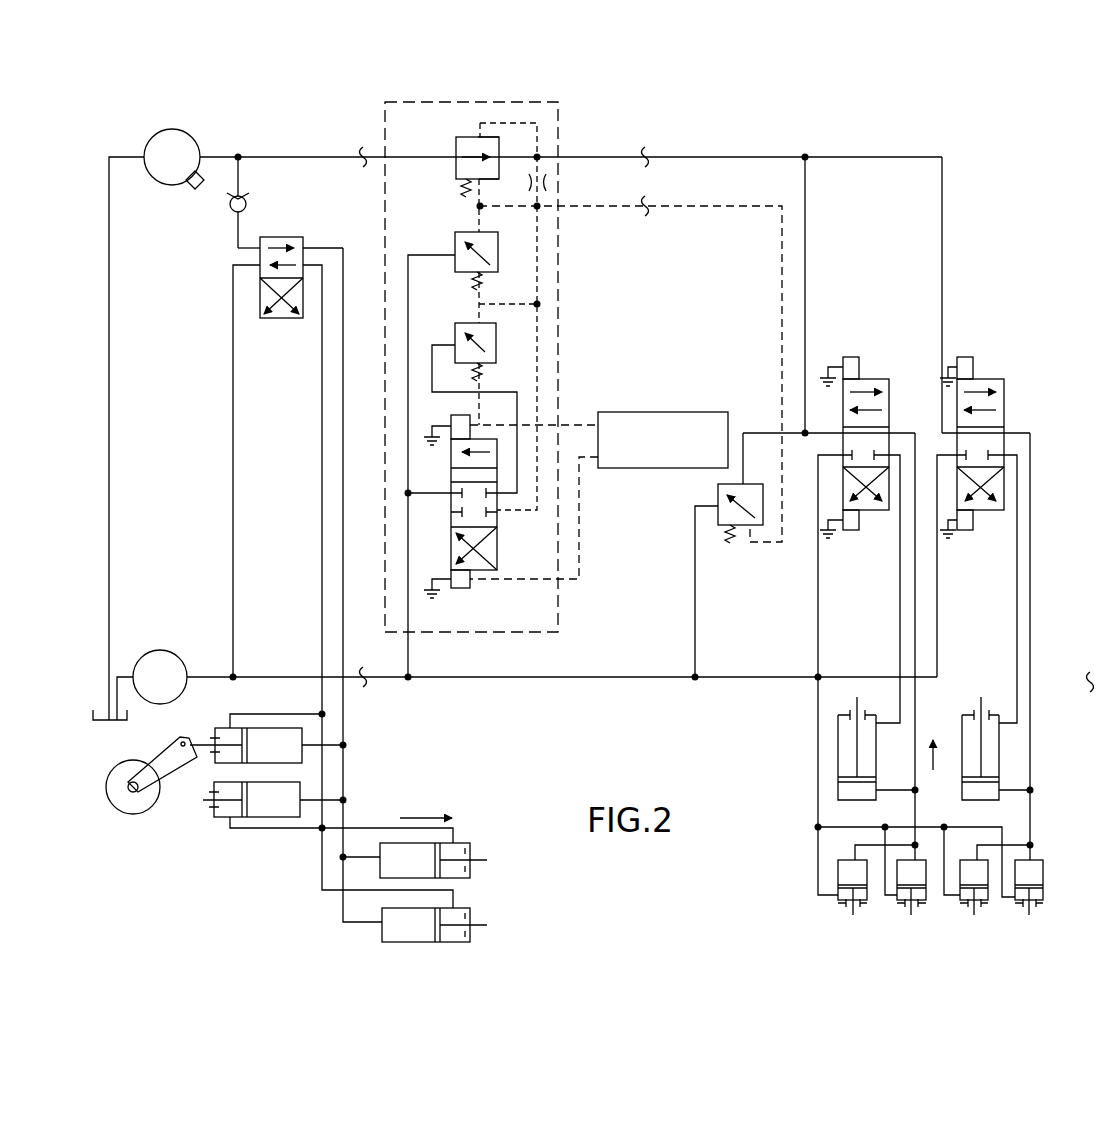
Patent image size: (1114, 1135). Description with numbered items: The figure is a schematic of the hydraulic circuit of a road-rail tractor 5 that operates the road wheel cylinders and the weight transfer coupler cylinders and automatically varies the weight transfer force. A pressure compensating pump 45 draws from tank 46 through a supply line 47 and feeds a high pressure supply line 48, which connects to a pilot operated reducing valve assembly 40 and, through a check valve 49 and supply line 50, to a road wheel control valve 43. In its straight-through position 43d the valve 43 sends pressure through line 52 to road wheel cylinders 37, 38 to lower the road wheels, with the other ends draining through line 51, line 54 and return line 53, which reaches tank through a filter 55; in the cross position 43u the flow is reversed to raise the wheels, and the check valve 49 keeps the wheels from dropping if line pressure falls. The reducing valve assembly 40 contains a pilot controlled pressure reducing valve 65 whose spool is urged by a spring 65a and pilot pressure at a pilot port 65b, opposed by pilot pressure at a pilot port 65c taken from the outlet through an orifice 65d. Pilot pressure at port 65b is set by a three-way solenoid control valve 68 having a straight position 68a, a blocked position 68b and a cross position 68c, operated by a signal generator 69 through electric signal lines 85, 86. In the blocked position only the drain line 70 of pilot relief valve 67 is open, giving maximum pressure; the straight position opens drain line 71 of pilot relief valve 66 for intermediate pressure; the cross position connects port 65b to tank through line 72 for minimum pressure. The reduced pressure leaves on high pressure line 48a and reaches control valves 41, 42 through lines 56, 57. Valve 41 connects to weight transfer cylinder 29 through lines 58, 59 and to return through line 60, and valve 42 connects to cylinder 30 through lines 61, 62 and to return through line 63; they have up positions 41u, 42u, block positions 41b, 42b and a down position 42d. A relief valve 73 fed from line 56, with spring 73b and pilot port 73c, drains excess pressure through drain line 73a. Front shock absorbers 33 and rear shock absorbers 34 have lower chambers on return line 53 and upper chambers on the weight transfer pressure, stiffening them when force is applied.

The vehicle 5 is at (1101, 697).
The weight transfer cylinder 29 is at (836, 757).
The weight transfer cylinder 30 is at (1001, 760).
The front shock absorbers 33 is at (894, 902).
The rear shock absorbers 34 is at (1016, 902).
The road wheel cylinder 37 is at (285, 781).
The road wheel cylinder 38 is at (465, 907).
The pilot operated solenoid controlled pressure reducing valve assembly 40 is at (563, 125).
The control valve 41 is at (875, 451).
The straight or up position 41u is at (889, 412).
The block position 41b is at (842, 450).
The control valve 42 is at (1007, 451).
The straight or up position 42u is at (1004, 414).
The block position 42b is at (1004, 447).
The cross or down position 42d is at (889, 498).
The road wheel control valve 43 is at (245, 256).
The straight-through position 43d is at (305, 247).
The cross position 43u is at (262, 306).
The pressure compensating pump 45 is at (192, 132).
The tank 46 is at (108, 720).
The supply line 47 is at (112, 390).
The high pressure supply line 48 is at (272, 156).
The high pressure line 48a is at (768, 157).
The check valve 49 is at (250, 197).
The supply line 50 is at (236, 245).
The line 51 is at (322, 440).
The line 52 is at (345, 505).
The return or tank line 53 is at (488, 679).
The line 54 is at (232, 518).
The filter 55 is at (172, 649).
The line 56 is at (806, 265).
The line 57 is at (941, 272).
The line 58 is at (898, 615).
The line 59 is at (918, 582).
The line 60 is at (818, 645).
The line 61 is at (1016, 666).
The line 62 is at (1031, 628).
The line 63 is at (938, 628).
The pilot controlled pressure reducing valve 65 is at (498, 150).
The spring 65a is at (462, 188).
The pilot port 65b is at (487, 182).
The pilot port 65c is at (478, 136).
The orifice 65d is at (550, 182).
The pilot relief valve 66 is at (498, 352).
The pilot relief valve 67 is at (500, 258).
The three-way solenoid operated control valve 68 is at (446, 506).
The straight position 68a is at (451, 470).
The blocked position 68b is at (451, 520).
The cross position 68c is at (451, 562).
The signal generator 69 is at (668, 411).
The drain line 70 is at (406, 414).
The drain line 71 is at (467, 392).
The line 72 is at (540, 262).
The relief valve 73 is at (635, 388).
The drain line 73a is at (697, 637).
The spring 73b is at (725, 533).
The pilot port 73c is at (760, 543).
The first electric signal line 85 is at (575, 422).
The second electric signal line 86 is at (581, 478).